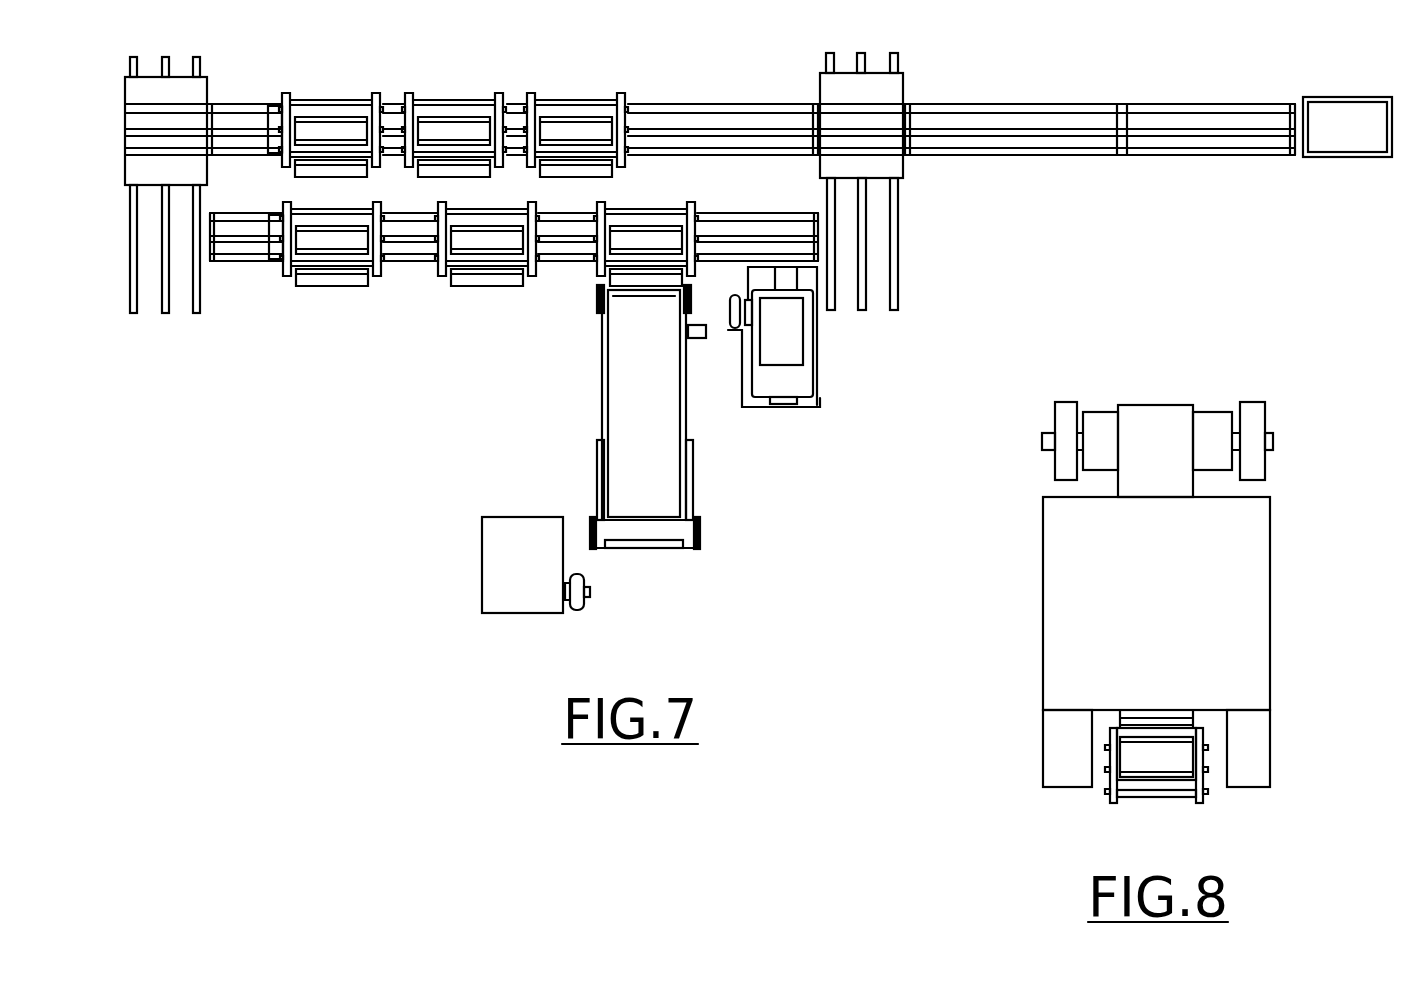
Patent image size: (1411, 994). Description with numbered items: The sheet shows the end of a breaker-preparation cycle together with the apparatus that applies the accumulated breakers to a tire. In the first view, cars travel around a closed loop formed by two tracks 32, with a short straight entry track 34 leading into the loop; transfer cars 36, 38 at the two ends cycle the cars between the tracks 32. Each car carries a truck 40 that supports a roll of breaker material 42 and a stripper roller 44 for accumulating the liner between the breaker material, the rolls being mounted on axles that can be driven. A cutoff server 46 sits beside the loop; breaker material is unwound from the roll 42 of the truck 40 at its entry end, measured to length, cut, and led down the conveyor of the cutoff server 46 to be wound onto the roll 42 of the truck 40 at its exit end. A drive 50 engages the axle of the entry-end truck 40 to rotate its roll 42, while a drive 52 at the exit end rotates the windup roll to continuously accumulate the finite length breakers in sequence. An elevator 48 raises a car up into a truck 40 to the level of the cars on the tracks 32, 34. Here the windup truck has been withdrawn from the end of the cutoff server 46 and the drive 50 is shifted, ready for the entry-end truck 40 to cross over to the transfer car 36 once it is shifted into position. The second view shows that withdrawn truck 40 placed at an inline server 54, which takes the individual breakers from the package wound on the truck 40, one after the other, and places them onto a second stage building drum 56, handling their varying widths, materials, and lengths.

In FIG. 7, the tracks 32 is at (745, 183).
In FIG. 7, the entry track 34 is at (1045, 104).
In FIG. 7, the transfer car 36 is at (886, 88).
In FIG. 7, the transfer car 38 is at (192, 95).
In FIG. 7, the truck 40 is at (393, 126).
In FIG. 8, the truck 40 is at (1205, 770).
In FIG. 7, the roll of breaker material 42 is at (327, 233).
In FIG. 7, the stripper roller 44 is at (328, 270).
In FIG. 7, the cutoff server 46 is at (685, 403).
In FIG. 7, the elevator 48 is at (1327, 145).
In FIG. 7, the drive 50 is at (793, 325).
In FIG. 7, the drive 52 is at (495, 560).
In FIG. 8, the inline server 54 is at (1265, 558).
In FIG. 8, the second stage building drum 56 is at (1155, 417).